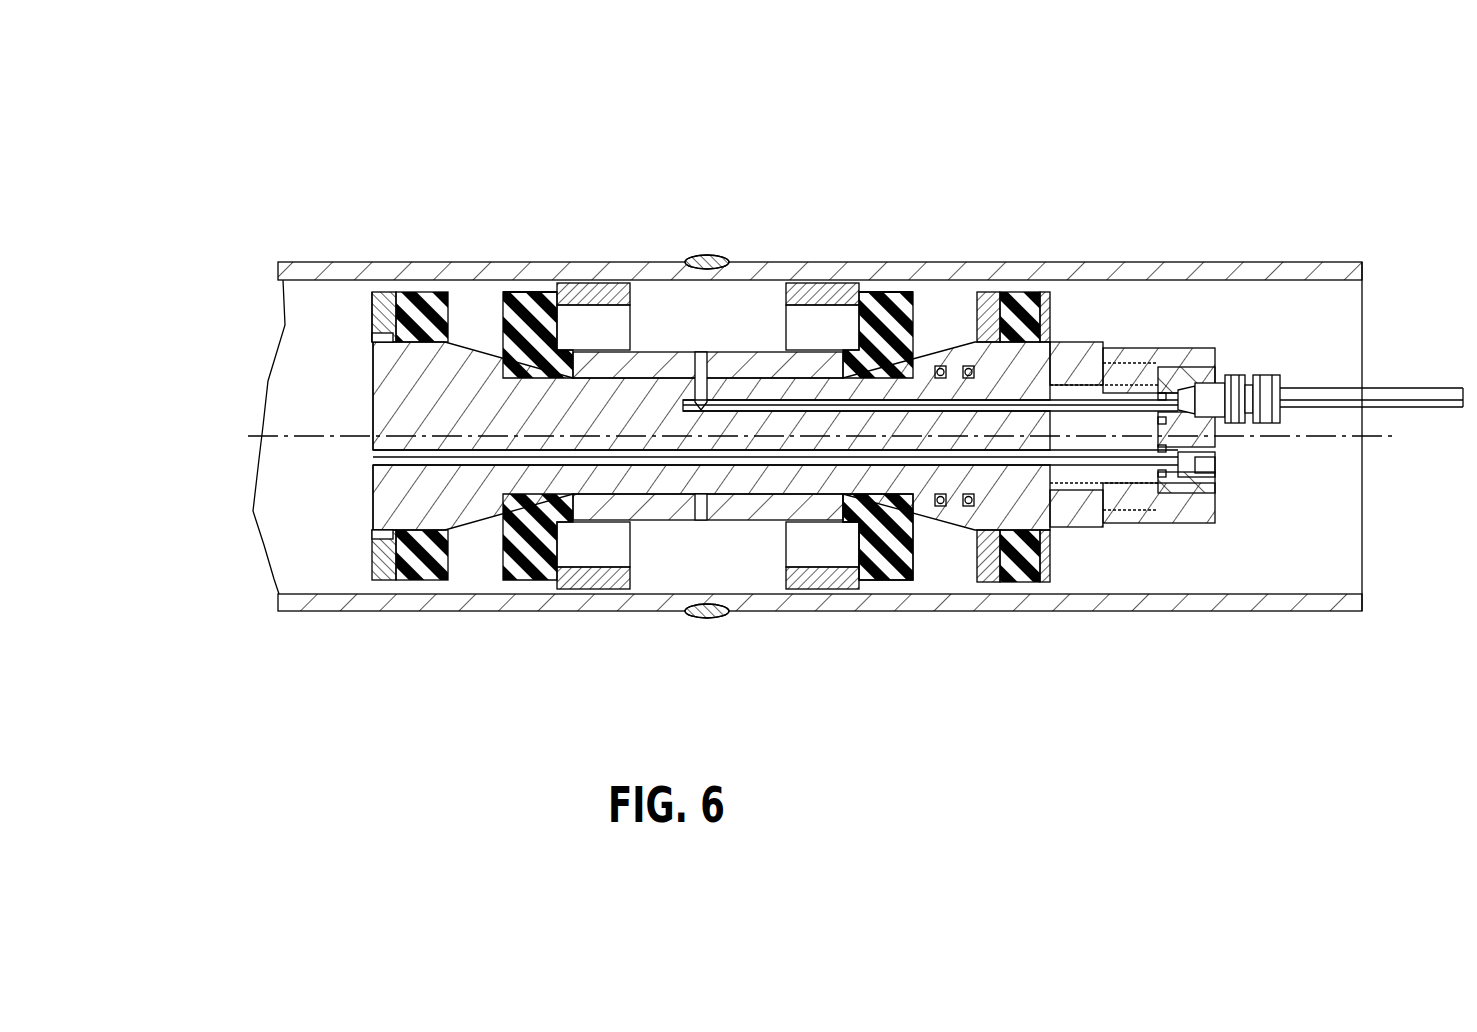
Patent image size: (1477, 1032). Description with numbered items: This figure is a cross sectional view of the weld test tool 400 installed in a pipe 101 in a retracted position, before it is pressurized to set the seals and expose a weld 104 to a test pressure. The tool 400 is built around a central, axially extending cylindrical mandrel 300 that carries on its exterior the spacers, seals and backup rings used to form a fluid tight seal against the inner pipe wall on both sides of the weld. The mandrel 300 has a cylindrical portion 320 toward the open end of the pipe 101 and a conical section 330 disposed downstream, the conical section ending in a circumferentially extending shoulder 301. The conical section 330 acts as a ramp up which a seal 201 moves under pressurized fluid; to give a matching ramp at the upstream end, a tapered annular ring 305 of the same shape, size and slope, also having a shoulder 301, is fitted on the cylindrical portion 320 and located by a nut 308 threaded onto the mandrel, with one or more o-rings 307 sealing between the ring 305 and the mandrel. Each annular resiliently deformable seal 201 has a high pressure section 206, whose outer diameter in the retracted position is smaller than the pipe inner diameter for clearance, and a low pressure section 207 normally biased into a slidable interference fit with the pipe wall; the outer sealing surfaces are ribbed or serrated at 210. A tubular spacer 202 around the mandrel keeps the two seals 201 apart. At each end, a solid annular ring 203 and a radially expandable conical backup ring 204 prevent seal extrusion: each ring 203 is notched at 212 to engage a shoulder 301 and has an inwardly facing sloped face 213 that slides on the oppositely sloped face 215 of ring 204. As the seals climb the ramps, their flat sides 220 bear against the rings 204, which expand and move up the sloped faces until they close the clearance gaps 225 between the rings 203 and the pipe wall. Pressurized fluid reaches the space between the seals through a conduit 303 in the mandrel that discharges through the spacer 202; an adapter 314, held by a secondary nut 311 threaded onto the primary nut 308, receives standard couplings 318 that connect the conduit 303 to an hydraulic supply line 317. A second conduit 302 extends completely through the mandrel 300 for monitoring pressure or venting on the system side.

The pipe 101 is at (807, 380).
The weld 104 is at (722, 345).
The seal 201 is at (707, 401).
The tubular spacer 202 is at (708, 426).
The solid annular ring 203 is at (688, 367).
The radially expandable conical backup ring 204 is at (696, 222).
The high pressure section 206 is at (711, 188).
The low pressure section 207 is at (708, 358).
The ribbed or serrated outer surface 210 is at (735, 450).
The notch 212 is at (270, 301).
The inwardly facing sloped face 213 is at (258, 469).
The sloped face 215 is at (644, 679).
The flat side 220 is at (707, 470).
The clearance gap 225 is at (291, 411).
The mandrel 300 is at (711, 514).
The shoulder 301 is at (663, 484).
The second conduit 302 is at (657, 496).
The conduit 303 is at (930, 544).
The tapered annular ring 305 is at (956, 612).
The o-ring 307 is at (1025, 240).
The nut 308 is at (1104, 401).
The secondary nut 311 is at (1159, 361).
The adapter 314 is at (1310, 494).
The hydraulic supply line 317 is at (1374, 356).
The coupling 318 is at (1250, 356).
The cylindrical portion 320 is at (700, 599).
The conical section 330 is at (620, 518).
The tool 400 is at (821, 638).